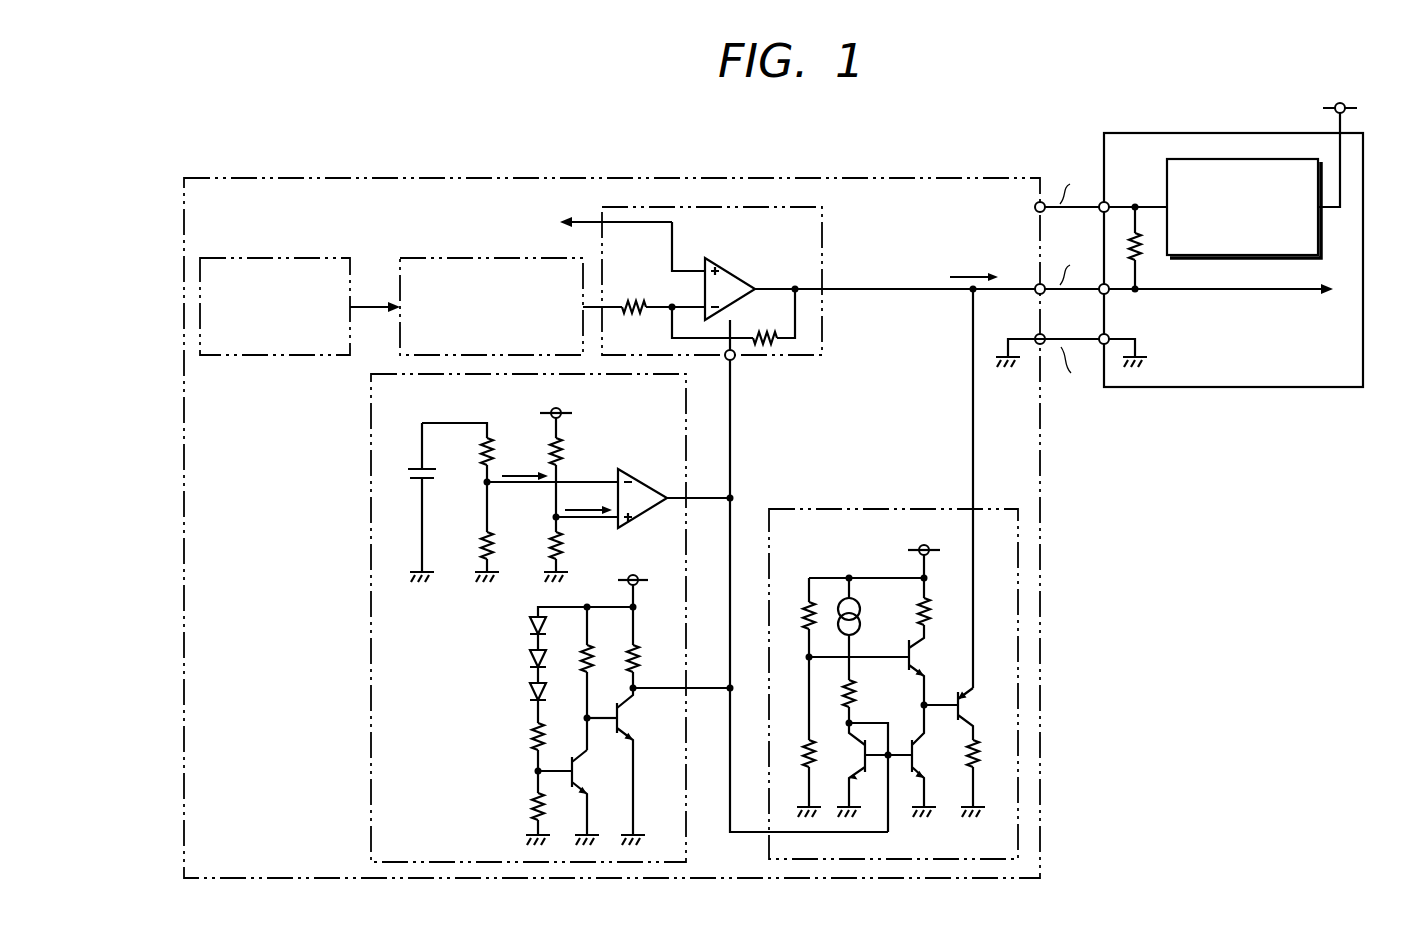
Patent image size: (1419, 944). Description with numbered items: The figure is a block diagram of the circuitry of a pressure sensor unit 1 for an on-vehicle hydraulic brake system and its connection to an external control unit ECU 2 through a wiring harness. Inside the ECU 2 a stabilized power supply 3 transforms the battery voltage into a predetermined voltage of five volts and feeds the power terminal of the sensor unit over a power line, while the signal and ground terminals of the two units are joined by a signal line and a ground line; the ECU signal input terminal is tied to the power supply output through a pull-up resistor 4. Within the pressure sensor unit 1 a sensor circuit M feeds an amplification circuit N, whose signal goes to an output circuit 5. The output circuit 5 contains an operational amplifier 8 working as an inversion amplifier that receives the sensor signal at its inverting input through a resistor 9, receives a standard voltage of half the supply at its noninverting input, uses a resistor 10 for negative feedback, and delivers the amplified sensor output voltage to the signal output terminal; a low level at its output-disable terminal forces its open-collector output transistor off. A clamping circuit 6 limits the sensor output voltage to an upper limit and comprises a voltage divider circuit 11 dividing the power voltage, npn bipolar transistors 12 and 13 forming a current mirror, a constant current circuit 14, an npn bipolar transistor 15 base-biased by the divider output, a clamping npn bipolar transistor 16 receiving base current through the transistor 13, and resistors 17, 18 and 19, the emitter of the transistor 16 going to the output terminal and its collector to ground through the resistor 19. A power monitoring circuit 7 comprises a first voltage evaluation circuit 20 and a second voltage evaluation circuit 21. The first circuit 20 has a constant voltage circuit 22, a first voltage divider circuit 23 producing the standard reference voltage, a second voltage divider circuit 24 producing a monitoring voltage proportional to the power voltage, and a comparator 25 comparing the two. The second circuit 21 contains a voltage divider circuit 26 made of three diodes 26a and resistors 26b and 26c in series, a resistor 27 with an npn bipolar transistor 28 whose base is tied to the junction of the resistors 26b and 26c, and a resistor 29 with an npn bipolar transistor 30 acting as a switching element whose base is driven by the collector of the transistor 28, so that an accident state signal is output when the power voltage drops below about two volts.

The pressure sensor unit 1 is at (914, 171).
The external control unit ECU 2 is at (1288, 398).
The stabilized power supply 3 is at (1268, 256).
The pull-up resistor 4 is at (1138, 256).
The output circuit 5 is at (830, 254).
The clamping circuit 6 is at (840, 492).
The power monitoring circuit 7 is at (371, 812).
The operational amplifier 8 is at (735, 273).
The resistor 9 is at (630, 304).
The resistor 10 is at (763, 334).
The voltage divider circuit 11 is at (795, 628).
The npn bipolar transistor 12 is at (848, 758).
The npn bipolar transistor 13 is at (928, 760).
The constant current circuit 14 is at (862, 612).
The npn bipolar transistor 15 is at (920, 662).
The npn bipolar transistor 16 is at (975, 712).
The resistor 17 is at (858, 700).
The resistor 18 is at (928, 603).
The resistor 19 is at (978, 768).
The first voltage evaluation circuit 20 is at (616, 438).
The second voltage evaluation circuit 21 is at (492, 683).
The constant voltage circuit 22 is at (418, 467).
The first voltage divider circuit 23 is at (475, 497).
The second voltage divider circuit 24 is at (548, 497).
The comparator 25 is at (638, 481).
The voltage divider circuit 26 is at (509, 732).
The diodes 26a is at (523, 658).
The resistor 26b is at (530, 733).
The resistor 26c is at (530, 805).
The resistor 27 is at (583, 650).
The npn bipolar transistor 28 is at (585, 775).
The resistor 29 is at (627, 650).
The npn bipolar transistor 30 is at (630, 736).
The sensor circuit M is at (266, 258).
The amplification circuit N is at (455, 258).